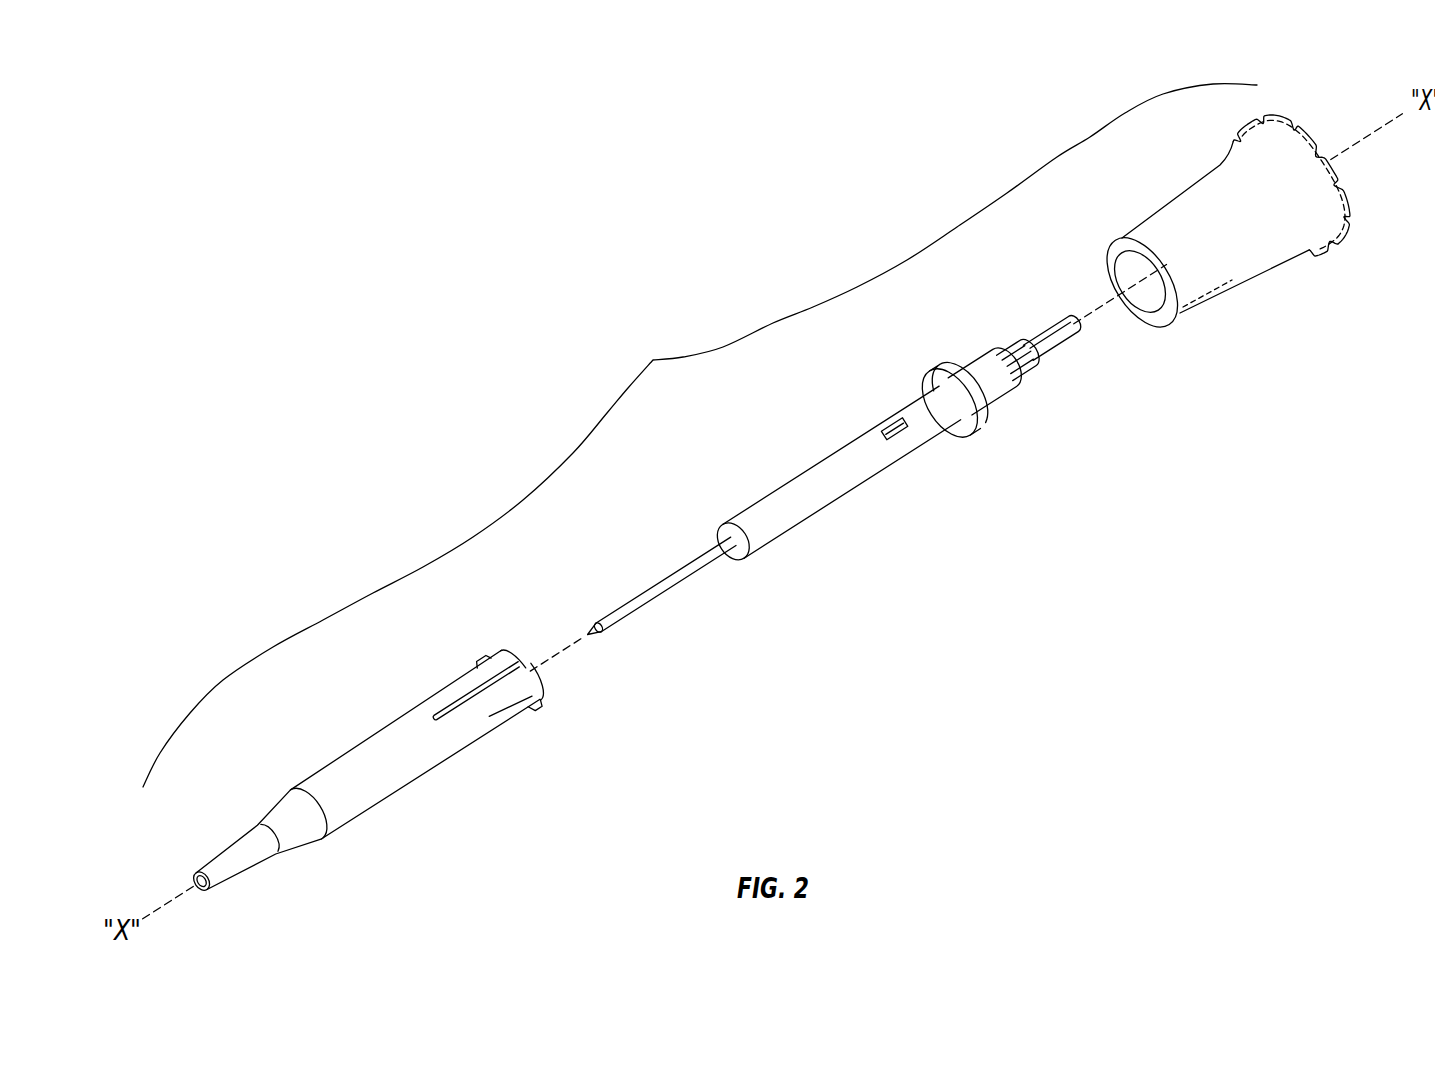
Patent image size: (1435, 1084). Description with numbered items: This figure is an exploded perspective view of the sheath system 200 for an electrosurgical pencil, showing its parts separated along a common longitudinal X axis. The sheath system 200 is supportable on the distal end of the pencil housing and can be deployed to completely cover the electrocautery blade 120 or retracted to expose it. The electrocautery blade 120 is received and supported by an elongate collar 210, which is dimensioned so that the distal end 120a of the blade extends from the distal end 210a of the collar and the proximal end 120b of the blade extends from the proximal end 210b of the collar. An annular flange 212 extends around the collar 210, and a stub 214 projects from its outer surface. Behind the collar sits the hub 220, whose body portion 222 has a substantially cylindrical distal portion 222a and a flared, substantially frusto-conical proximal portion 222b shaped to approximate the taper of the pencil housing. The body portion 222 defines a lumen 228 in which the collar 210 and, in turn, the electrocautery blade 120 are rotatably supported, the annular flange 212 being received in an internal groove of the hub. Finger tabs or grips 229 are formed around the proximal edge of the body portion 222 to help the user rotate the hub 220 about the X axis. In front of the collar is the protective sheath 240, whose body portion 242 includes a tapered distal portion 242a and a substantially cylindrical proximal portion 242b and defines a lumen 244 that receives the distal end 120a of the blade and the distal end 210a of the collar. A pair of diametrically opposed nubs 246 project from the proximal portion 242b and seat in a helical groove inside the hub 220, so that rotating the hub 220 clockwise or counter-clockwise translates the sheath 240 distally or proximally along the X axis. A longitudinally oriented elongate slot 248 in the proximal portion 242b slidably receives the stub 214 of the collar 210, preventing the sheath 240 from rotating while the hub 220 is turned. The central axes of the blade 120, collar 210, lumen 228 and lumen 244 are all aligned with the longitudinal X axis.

The sheath system 200 is at (700, 435).
The electrocautery blade 120 is at (808, 468).
The distal end of electrocautery blade 120a is at (612, 606).
The proximal end of electrocautery blade 120b is at (1043, 331).
The collar 210 is at (900, 457).
The distal end of collar 210a is at (758, 540).
The proximal end of collar 210b is at (1008, 382).
The annular flange 212 is at (982, 413).
The stub 214 is at (907, 432).
The hub 220 is at (1237, 240).
The body portion of hub 222 is at (1256, 254).
The distal portion of body portion 222a is at (1190, 312).
The proximal portion of body portion 222b is at (1320, 234).
The lumen of hub 228 is at (1128, 270).
The finger tabs or grips 229 is at (1350, 204).
The protective sheath 240 is at (369, 743).
The body portion of sheath 242 is at (330, 771).
The tapered distal portion 242a is at (228, 847).
The cylindrical proximal portion 242b is at (432, 762).
The lumen of sheath 244 is at (196, 879).
The nub 246 is at (478, 656).
The elongate slot 248 is at (517, 645).